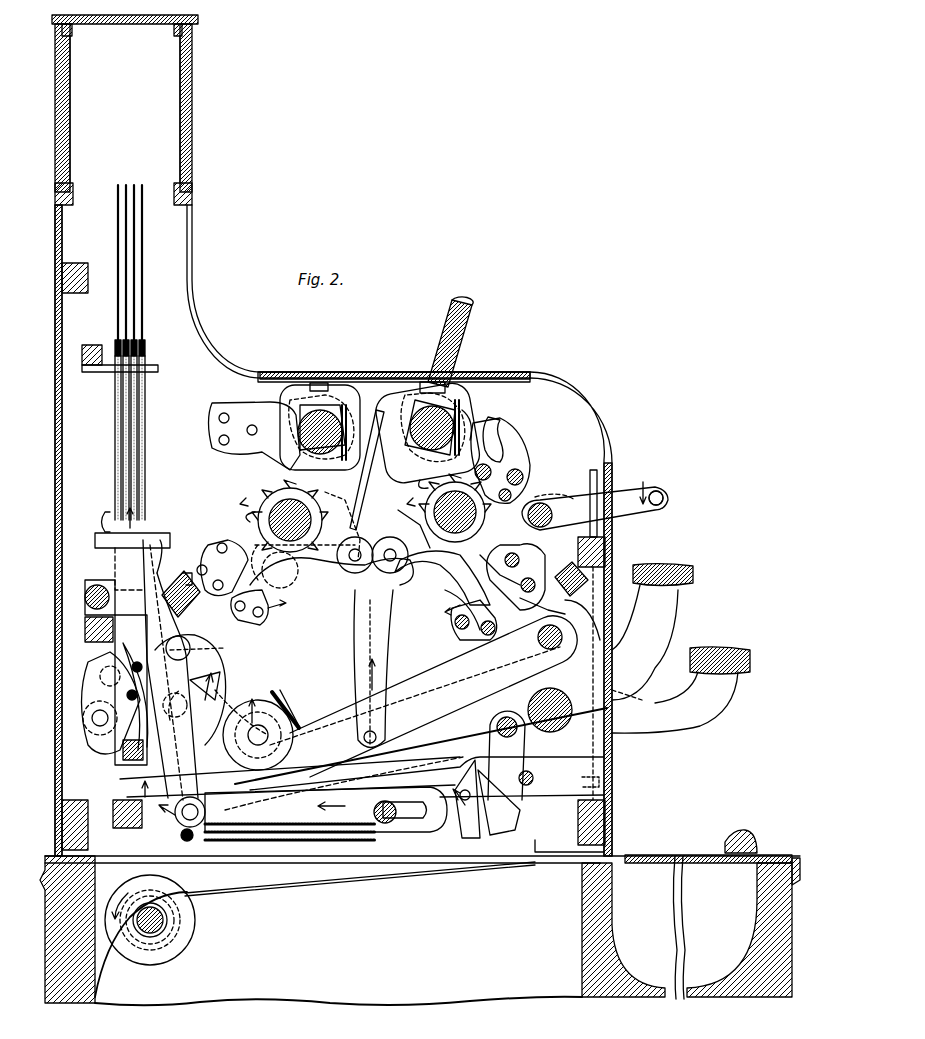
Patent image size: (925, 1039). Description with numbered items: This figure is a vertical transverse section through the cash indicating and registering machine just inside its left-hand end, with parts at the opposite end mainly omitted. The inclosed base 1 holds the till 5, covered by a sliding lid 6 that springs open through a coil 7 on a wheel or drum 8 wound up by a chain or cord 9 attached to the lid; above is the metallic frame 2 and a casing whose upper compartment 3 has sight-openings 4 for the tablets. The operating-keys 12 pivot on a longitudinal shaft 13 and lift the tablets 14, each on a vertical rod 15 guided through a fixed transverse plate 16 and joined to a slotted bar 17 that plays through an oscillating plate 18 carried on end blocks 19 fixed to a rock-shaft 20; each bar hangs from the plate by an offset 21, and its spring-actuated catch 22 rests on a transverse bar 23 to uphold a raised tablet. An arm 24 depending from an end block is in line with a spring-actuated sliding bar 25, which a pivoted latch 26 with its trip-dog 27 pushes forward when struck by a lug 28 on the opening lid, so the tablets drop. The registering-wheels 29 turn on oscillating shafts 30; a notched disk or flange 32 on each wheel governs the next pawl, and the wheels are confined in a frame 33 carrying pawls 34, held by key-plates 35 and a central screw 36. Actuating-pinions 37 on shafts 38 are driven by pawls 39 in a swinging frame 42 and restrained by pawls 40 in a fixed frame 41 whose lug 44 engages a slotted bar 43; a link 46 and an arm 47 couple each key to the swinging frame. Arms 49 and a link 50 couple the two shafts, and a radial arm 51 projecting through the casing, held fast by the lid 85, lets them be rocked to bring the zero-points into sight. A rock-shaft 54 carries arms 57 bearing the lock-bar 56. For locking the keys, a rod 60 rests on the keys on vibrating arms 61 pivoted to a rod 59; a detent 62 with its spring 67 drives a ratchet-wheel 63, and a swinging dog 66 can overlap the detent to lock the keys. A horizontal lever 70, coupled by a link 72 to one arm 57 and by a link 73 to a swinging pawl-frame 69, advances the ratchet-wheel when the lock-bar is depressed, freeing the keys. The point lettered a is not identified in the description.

The inclosed base 1 is at (420, 930).
The metallic frame 2 is at (76, 264).
The upper compartment 3 is at (125, 109).
The sight-openings 4 is at (55, 118).
The till 5 is at (691, 914).
The sliding lid 6 is at (632, 855).
The coil spring 7 is at (165, 932).
The wheel or drum 8 is at (190, 912).
The chain or cord 9 is at (348, 877).
The operating-keys 12 is at (118, 790).
The longitudinal shaft 13 is at (550, 698).
The tablets 14 is at (134, 185).
The vertical rod 15 is at (145, 390).
The fixed transverse plate 16 is at (148, 366).
The longitudinally-slotted bars 17 is at (145, 525).
The oscillating plate 18 is at (180, 552).
The end blocks 19 is at (132, 561).
The rock-shaft 20 is at (92, 585).
The lateral plate or offset 21 is at (110, 515).
The spring-actuated catch 22 is at (118, 748).
The transverse bar 23 is at (91, 638).
The arm 24 is at (174, 690).
The horizontal spring-actuated sliding bar 25 is at (326, 813).
The pivoted latch 26 is at (462, 815).
The swinging trip-dog 27 is at (497, 818).
The lug 28 is at (537, 845).
The registering-wheels 29 is at (332, 402).
The oscillating shafts 30 is at (381, 433).
The disk or annular flange 32 is at (252, 512).
The carrier or frame 33 is at (527, 452).
The spring-actuated pawls 34 is at (488, 447).
The key-plates 35 is at (382, 435).
The central screw 36 is at (367, 468).
The actuating-pinions 37 is at (246, 500).
The shafts 38 is at (283, 512).
The spring-actuated pawls 39 is at (455, 600).
The restraining-pawls 40 is at (500, 565).
The frame 41 is at (380, 574).
The swinging frame 42 is at (364, 614).
The longitudinally-slotted bar 43 is at (205, 604).
The lug 44 is at (183, 574).
The link 46 is at (357, 612).
The arm 47 is at (442, 578).
The arms 49 is at (420, 516).
The pivoted link 50 is at (331, 562).
The radial arm 51 is at (466, 338).
The rock-shaft 54 is at (553, 510).
The lock-bar 56 is at (656, 492).
The arms 57 is at (633, 495).
The parallel rod 59 is at (540, 637).
The rod 60 is at (262, 742).
The vibrating arms 61 is at (423, 696).
The spring-actuated pawl block or detent 62 is at (241, 702).
The ratchet-wheel 63 is at (216, 678).
The swinging dog 66 is at (192, 648).
The spring 67 is at (272, 698).
The swinging frame 69 is at (92, 688).
The horizontal lever 70 is at (427, 777).
The link 72 is at (582, 620).
The link 73 is at (235, 796).
The lid 85 is at (328, 374).
The point a is at (473, 424).